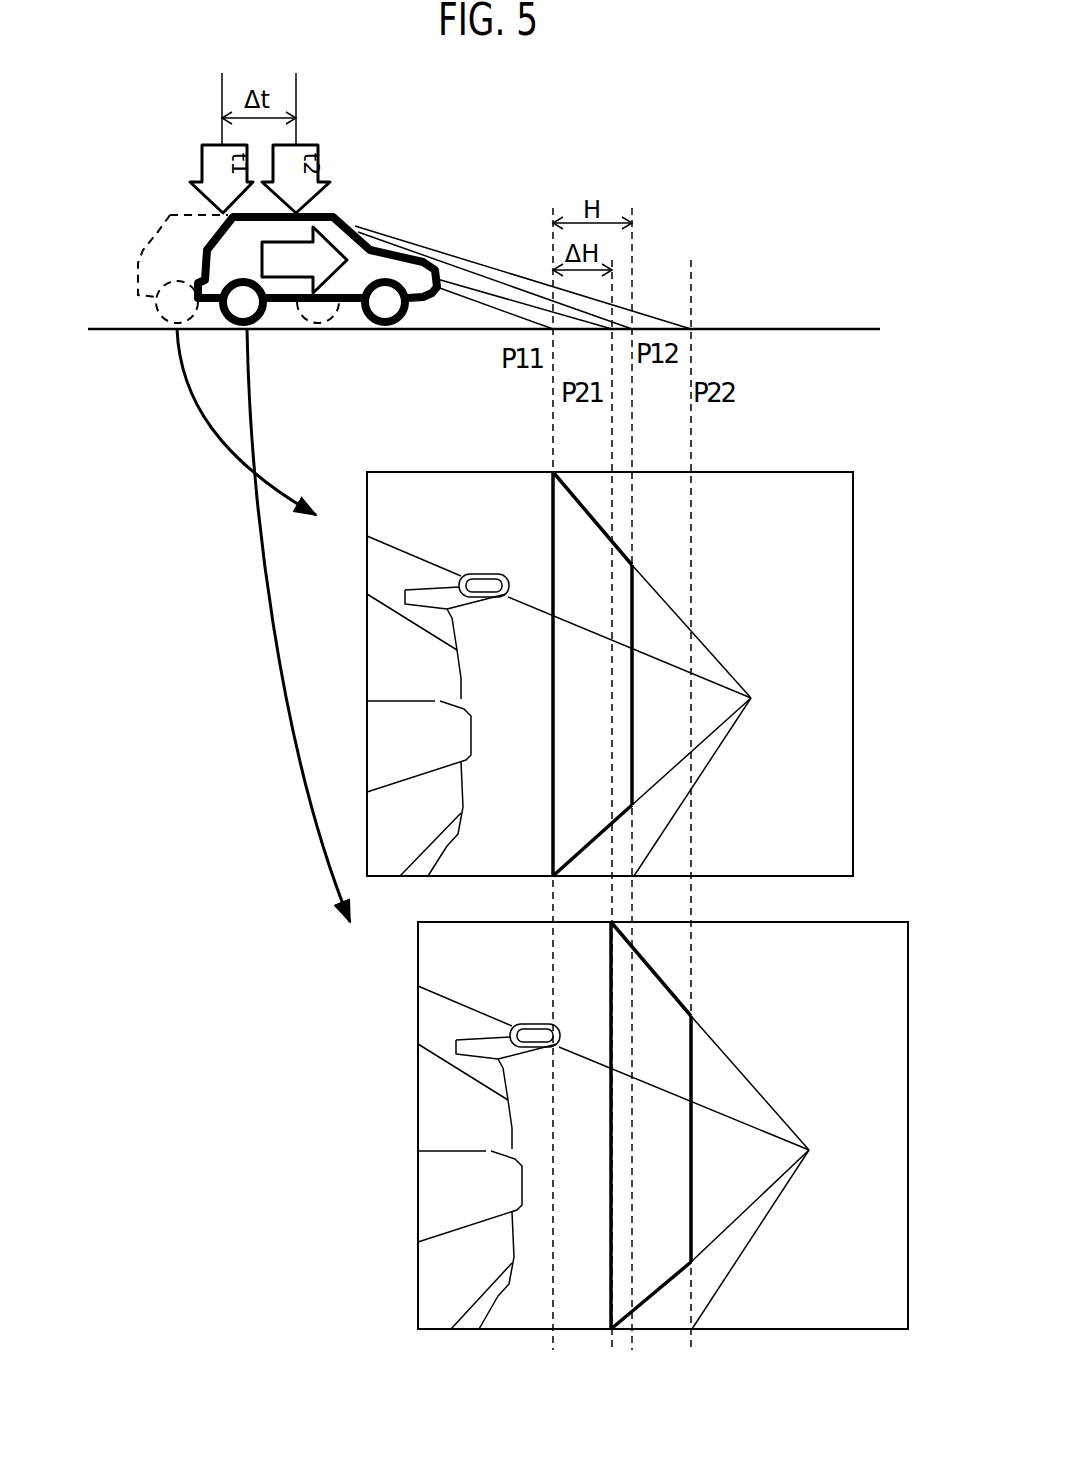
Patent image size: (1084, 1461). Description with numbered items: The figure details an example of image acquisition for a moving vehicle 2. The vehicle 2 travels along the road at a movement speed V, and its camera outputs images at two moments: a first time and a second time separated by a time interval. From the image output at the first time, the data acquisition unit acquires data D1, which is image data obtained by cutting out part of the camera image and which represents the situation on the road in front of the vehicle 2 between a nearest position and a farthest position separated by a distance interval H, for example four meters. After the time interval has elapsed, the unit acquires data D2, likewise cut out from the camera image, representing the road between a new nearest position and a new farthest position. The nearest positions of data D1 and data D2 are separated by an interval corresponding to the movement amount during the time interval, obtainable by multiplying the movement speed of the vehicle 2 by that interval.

The vehicle 2 is at (327, 215).
The data D1 is at (562, 535).
The data D2 is at (669, 1021).